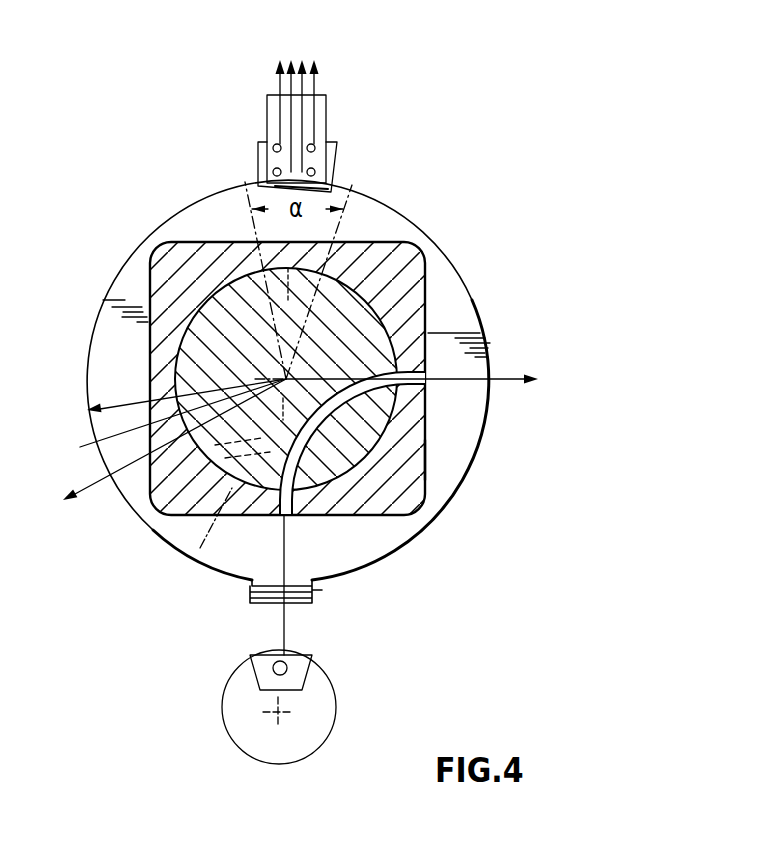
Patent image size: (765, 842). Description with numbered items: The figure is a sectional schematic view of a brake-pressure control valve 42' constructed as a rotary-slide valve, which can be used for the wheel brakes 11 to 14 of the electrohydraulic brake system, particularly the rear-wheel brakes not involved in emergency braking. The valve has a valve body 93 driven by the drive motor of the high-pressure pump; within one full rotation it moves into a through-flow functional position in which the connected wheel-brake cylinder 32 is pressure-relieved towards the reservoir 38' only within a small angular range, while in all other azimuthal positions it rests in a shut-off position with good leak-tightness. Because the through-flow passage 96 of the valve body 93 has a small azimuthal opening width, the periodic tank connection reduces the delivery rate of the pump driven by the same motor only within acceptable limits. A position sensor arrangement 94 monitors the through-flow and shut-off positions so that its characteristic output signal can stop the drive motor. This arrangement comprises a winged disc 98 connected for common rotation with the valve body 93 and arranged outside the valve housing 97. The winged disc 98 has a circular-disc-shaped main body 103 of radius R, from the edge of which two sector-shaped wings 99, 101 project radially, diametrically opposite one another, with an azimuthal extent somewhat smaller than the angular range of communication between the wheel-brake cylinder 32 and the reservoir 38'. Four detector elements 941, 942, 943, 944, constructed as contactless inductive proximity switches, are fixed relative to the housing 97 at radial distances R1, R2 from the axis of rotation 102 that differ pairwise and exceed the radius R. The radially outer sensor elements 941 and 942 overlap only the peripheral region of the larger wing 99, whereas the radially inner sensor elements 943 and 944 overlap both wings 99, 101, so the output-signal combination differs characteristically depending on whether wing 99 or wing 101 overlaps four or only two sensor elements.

The position sensor arrangement 94 is at (349, 69).
The detector element 941 is at (275, 144).
The detector element 942 is at (314, 144).
The detector element 943 is at (273, 171).
The detector element 944 is at (315, 171).
The sector-shaped wing 99 is at (332, 150).
The brake-pressure control valve 42' is at (302, 350).
The valve body 93 is at (370, 347).
The reservoir 38' is at (433, 365).
The through-flow passage 96 is at (417, 457).
The valve housing 97 is at (428, 522).
The winged disc 98 is at (428, 560).
The axis of rotation 102 is at (200, 548).
The main body 103 is at (232, 562).
The sector-shaped wing 101 is at (318, 590).
The wheel-brake cylinder 32 is at (303, 672).
The wheel brake 11 is at (331, 707).
The wheel brake 14 is at (318, 728).
The radius R is at (128, 404).
The radial distance R1 is at (94, 485).
The radial distance R2 is at (120, 433).